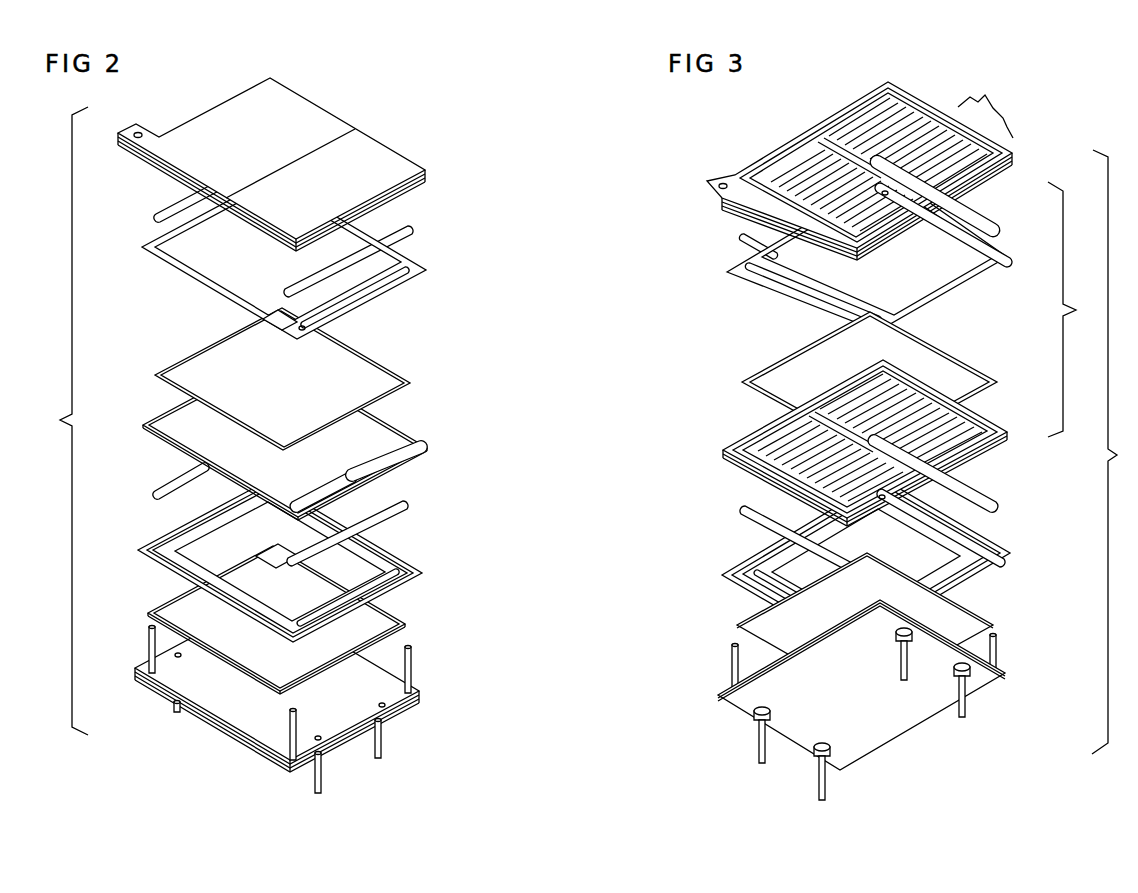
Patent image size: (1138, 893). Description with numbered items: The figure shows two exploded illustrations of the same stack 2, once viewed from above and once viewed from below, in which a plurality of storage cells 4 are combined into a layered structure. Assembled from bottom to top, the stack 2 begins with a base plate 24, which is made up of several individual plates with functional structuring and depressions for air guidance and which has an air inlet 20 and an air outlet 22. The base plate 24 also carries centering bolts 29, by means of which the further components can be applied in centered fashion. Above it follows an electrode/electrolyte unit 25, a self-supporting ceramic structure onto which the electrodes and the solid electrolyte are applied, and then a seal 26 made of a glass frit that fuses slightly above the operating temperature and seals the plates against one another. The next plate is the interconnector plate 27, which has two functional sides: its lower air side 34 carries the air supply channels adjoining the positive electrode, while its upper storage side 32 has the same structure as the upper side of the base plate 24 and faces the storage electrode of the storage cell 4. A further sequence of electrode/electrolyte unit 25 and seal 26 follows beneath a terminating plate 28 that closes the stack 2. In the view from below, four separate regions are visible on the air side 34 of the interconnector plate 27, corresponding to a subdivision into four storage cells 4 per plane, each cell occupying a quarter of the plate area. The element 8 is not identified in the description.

In FIG. 2, the stack 2 is at (65, 421).
In FIG. 3, the stack 2 is at (1114, 452).
In FIG. 3, the storage cell 4 is at (1027, 251).
In FIG. 2, the seal 8 is at (153, 235).
In FIG. 3, the seal 8 is at (1003, 260).
In FIG. 3, the air inlet 20 is at (753, 748).
In FIG. 2, the air outlet 22 is at (385, 747).
In FIG. 2, the base plate 24 is at (420, 698).
In FIG. 3, the base plate 24 is at (718, 697).
In FIG. 2, the electrode/electrolyte unit 25 is at (393, 615).
In FIG. 3, the electrode/electrolyte unit 25 is at (733, 623).
In FIG. 2, the seal 26 is at (410, 558).
In FIG. 3, the seal 26 is at (720, 560).
In FIG. 2, the interconnector plate 27 is at (420, 442).
In FIG. 3, the interconnector plate 27 is at (722, 452).
In FIG. 2, the terminating plate 28 is at (397, 150).
In FIG. 3, the terminating plate 28 is at (735, 165).
In FIG. 2, the centering bolts 29 is at (143, 647).
In FIG. 2, the storage side 32 is at (190, 440).
In FIG. 3, the air side 34 is at (977, 453).